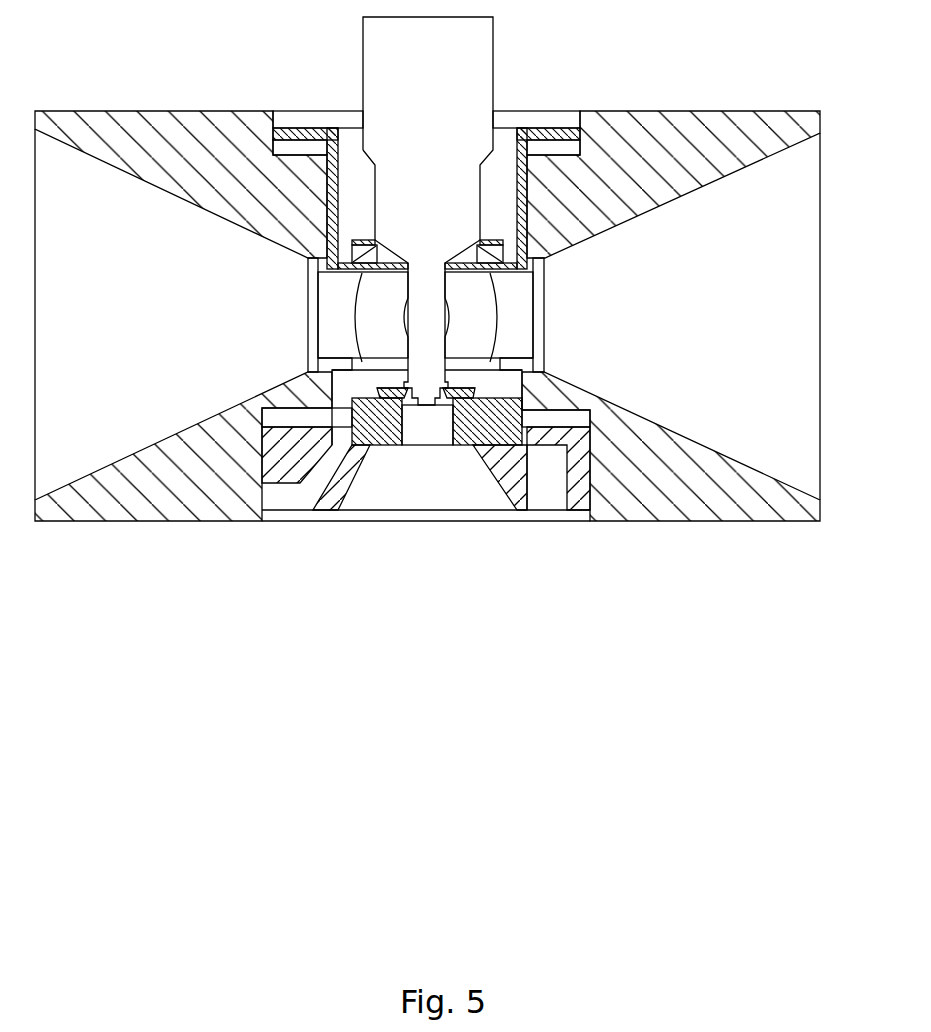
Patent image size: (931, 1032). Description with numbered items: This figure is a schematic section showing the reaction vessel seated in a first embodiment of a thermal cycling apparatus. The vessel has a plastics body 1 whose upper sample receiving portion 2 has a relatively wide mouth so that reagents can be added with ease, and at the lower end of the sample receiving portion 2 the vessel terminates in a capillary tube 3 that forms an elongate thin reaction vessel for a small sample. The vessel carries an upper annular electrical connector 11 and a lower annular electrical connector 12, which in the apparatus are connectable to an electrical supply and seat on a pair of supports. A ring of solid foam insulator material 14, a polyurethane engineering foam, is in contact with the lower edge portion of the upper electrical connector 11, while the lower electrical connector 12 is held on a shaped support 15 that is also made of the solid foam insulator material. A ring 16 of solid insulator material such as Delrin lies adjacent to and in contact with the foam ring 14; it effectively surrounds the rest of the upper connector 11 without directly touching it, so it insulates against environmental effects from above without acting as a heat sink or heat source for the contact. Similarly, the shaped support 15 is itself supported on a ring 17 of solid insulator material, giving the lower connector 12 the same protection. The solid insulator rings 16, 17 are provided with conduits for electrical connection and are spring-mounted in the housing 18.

The plastics body 1 is at (494, 195).
The upper sample receiving portion 2 is at (392, 187).
The capillary tube 3 is at (423, 352).
The upper annular electrical connector 11 is at (470, 258).
The lower annular electrical connector 12 is at (423, 385).
The ring of solid foam insulator material 14 is at (483, 240).
The shaped support 15 is at (393, 397).
The ring of solid insulator material 16 is at (306, 255).
The ring of solid insulator material 17 is at (468, 423).
The housing 18 is at (507, 473).